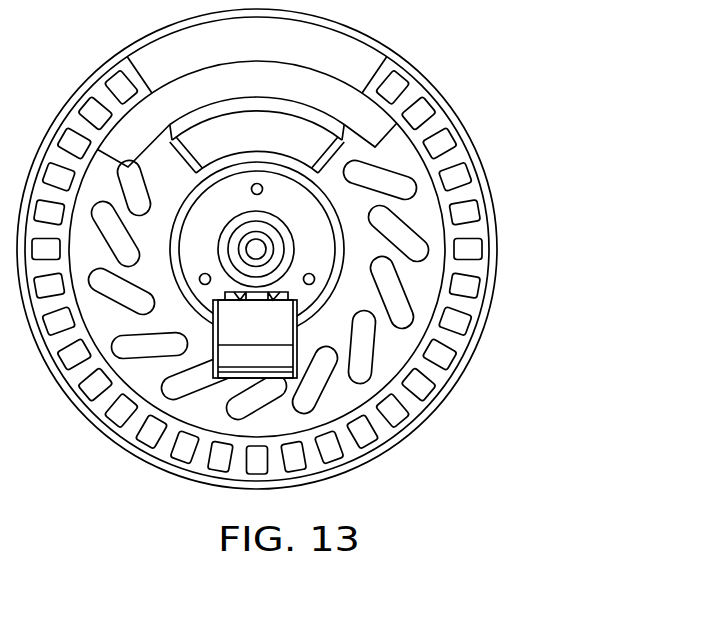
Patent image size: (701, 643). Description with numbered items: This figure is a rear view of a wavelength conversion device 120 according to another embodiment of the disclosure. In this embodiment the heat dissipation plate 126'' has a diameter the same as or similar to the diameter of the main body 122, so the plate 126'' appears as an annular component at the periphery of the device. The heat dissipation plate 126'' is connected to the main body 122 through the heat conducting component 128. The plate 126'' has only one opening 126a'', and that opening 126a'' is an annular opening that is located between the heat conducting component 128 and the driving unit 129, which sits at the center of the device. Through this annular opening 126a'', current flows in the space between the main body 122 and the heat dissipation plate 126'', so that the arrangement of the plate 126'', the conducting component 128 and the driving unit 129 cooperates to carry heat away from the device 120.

The wavelength conversion device 120 is at (614, 456).
The main body 122 is at (397, 148).
The heat dissipation plate 126'' is at (309, 249).
The opening 126a'' is at (524, 308).
The heat conducting component 128 is at (417, 387).
The driving unit 129 is at (312, 248).